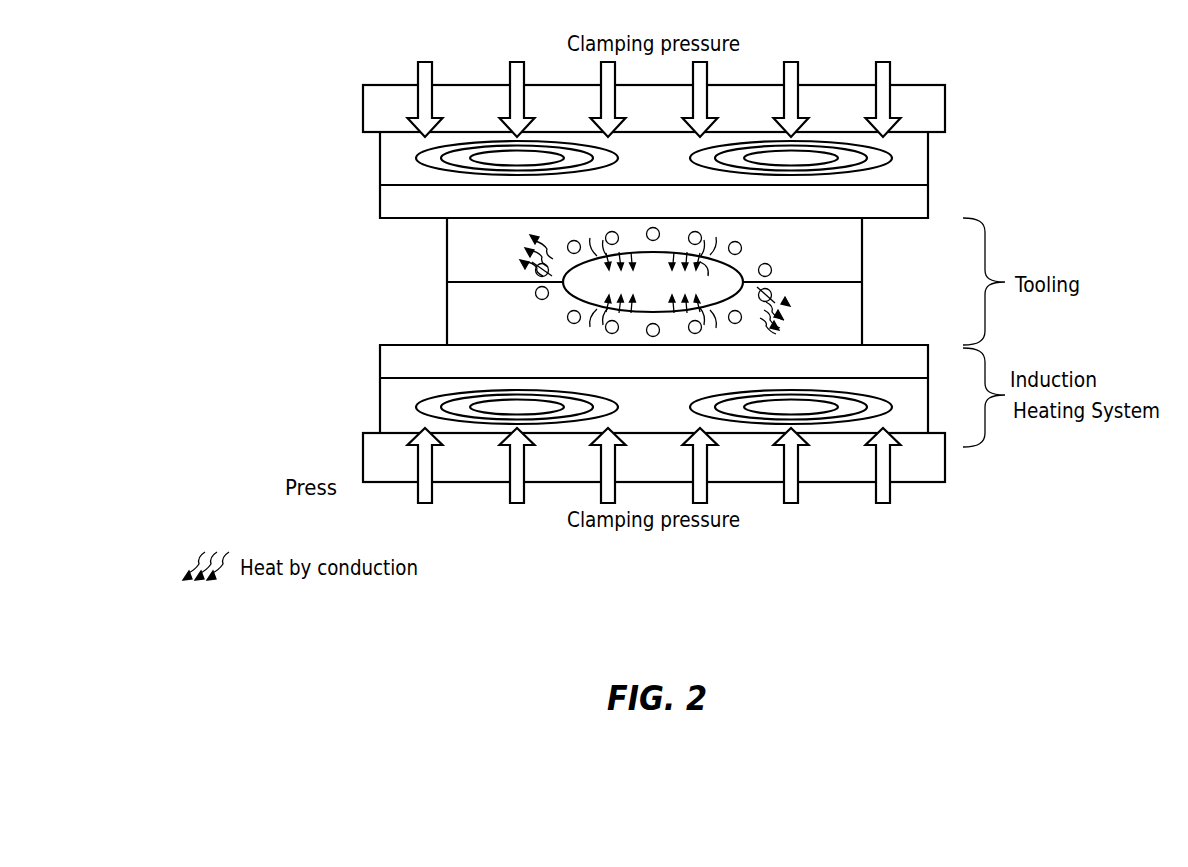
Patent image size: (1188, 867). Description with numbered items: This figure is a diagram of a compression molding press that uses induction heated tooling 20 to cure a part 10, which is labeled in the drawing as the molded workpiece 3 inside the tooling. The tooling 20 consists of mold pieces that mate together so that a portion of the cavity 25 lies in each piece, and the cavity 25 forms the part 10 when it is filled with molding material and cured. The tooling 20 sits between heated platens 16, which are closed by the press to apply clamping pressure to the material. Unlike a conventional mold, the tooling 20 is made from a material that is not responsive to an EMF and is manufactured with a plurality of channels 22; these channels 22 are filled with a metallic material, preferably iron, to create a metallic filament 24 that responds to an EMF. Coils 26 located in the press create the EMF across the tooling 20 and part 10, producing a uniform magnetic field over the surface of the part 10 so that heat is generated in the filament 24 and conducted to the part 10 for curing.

The workpiece 3 is at (653, 282).
The part 10 is at (592, 290).
The heated platens 16 is at (398, 205).
The induction heated tooling 20 is at (480, 253).
The channels 22 is at (772, 272).
The metallic filament 24 is at (742, 318).
The cavity 25 is at (717, 280).
The coils 26 is at (892, 158).